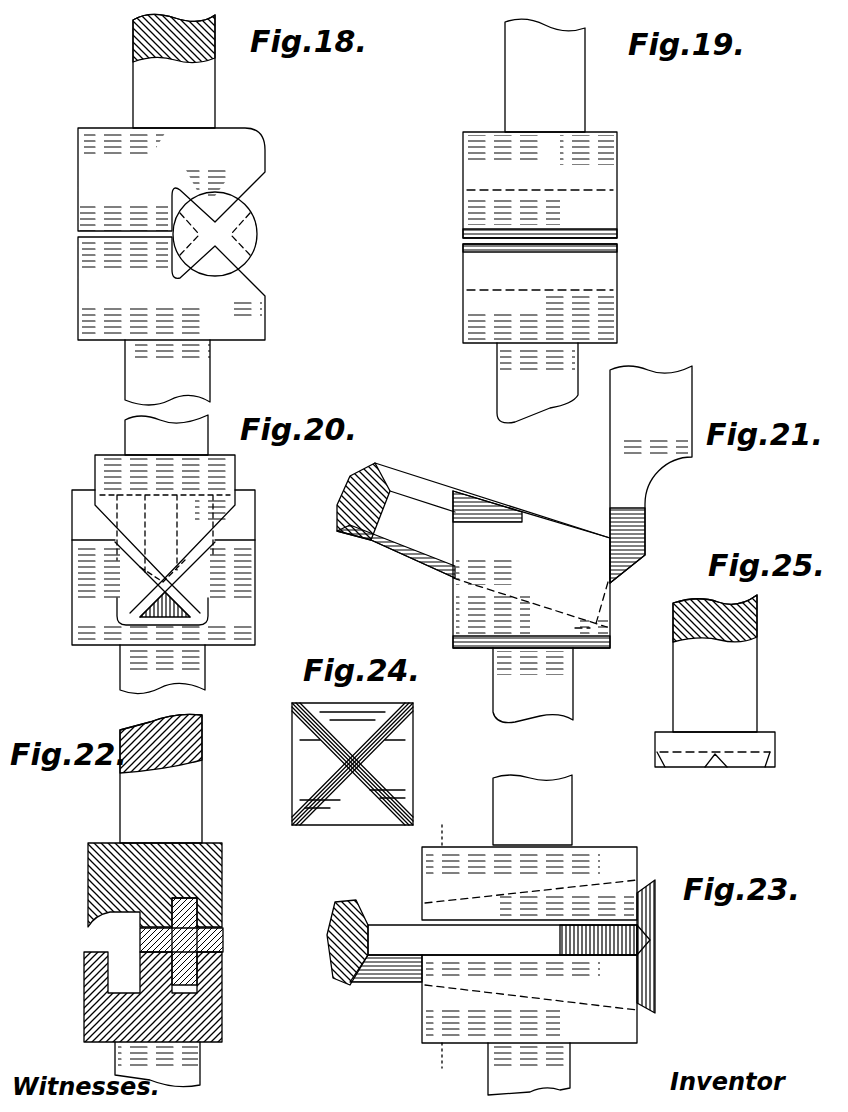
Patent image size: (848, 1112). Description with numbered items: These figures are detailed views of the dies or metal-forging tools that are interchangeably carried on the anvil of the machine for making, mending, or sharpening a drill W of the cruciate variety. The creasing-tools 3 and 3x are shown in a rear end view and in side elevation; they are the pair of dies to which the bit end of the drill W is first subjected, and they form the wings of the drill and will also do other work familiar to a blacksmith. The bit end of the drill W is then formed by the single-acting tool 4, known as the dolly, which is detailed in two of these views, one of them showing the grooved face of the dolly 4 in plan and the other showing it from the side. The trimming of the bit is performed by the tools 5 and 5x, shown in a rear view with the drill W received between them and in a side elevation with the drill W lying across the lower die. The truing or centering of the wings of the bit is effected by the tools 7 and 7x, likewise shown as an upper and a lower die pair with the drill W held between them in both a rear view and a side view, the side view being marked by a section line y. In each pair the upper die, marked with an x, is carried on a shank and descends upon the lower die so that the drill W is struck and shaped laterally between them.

In FIG. 18, the creasing-tool 3 is at (250, 320).
In FIG. 19, the creasing-tool 3 is at (604, 298).
In FIG. 18, the creasing-tool 3x is at (262, 150).
In FIG. 19, the creasing-tool 3x is at (610, 165).
In FIG. 18, the drill W is at (238, 232).
In FIG. 20, the drill W is at (182, 602).
In FIG. 21, the drill W is at (400, 480).
In FIG. 22, the drill W is at (225, 940).
In FIG. 23, the drill W is at (328, 943).
In FIG. 20, the trimming-tool 5 is at (245, 600).
In FIG. 21, the trimming-tool 5 is at (531, 607).
In FIG. 20, the trimming-tool 5x is at (93, 453).
In FIG. 21, the trimming-tool 5x is at (638, 495).
In FIG. 25, the dolly 4 is at (745, 700).
In FIG. 24, the dolly 4 is at (405, 757).
In FIG. 22, the truing-tool 7 is at (210, 1012).
In FIG. 23, the truing-tool 7 is at (432, 998).
In FIG. 22, the truing-tool 7x is at (222, 878).
In FIG. 23, the truing-tool 7x is at (428, 863).
In FIG. 23, the section line y- y is at (441, 946).